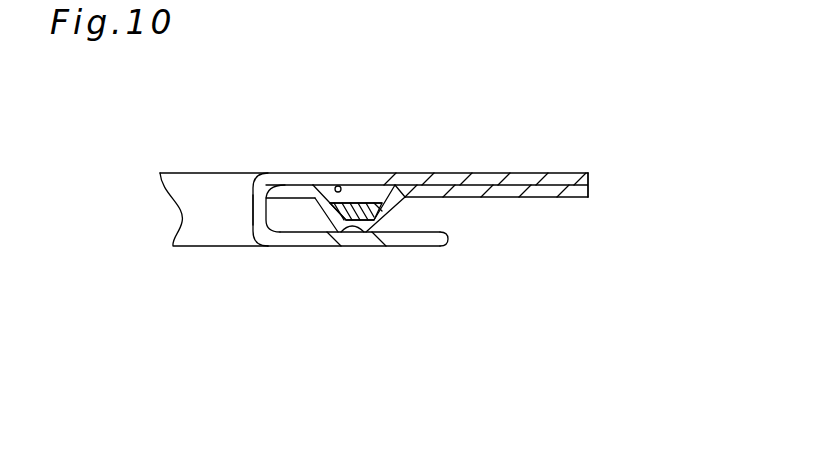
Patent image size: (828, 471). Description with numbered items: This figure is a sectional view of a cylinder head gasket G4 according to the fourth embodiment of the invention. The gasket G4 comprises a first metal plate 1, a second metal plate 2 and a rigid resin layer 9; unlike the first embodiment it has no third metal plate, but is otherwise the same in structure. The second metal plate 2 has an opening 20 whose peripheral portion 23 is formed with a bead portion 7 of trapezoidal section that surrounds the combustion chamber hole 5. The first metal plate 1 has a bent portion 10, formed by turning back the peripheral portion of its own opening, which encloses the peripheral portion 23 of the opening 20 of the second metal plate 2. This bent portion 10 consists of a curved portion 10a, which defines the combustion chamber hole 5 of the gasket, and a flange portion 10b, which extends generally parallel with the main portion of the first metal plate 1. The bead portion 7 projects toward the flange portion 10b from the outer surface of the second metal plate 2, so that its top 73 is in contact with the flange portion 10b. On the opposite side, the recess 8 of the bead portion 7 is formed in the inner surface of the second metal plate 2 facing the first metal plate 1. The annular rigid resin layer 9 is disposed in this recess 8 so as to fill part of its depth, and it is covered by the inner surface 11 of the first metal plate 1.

The first metal plate 1 is at (553, 180).
The second metal plate 2 is at (548, 198).
The combustion chamber hole 5 is at (211, 190).
The bead portion 7 is at (383, 237).
The top 73 is at (351, 234).
The recess 8 is at (392, 190).
The rigid resin layer 9 is at (368, 200).
The bent portion 10 is at (312, 238).
The curved portion 10a is at (257, 223).
The flange portion 10b is at (429, 242).
The inner surface 11 is at (342, 186).
The opening 20 is at (267, 178).
The peripheral portion 23 is at (297, 184).
The cylinder head gasket G4 is at (598, 185).